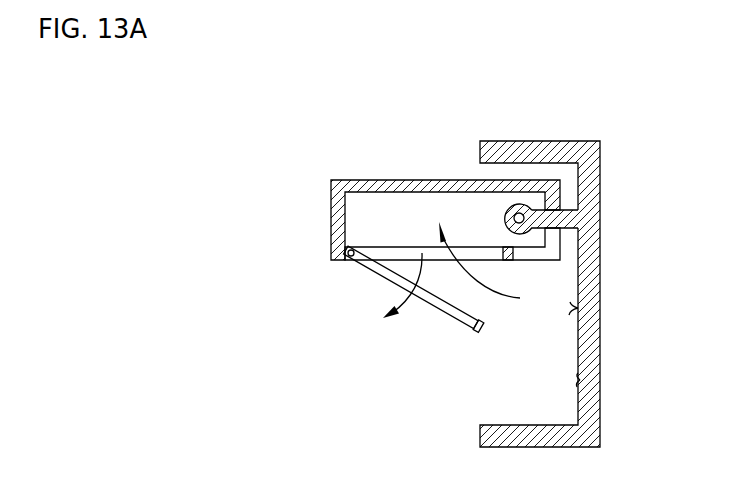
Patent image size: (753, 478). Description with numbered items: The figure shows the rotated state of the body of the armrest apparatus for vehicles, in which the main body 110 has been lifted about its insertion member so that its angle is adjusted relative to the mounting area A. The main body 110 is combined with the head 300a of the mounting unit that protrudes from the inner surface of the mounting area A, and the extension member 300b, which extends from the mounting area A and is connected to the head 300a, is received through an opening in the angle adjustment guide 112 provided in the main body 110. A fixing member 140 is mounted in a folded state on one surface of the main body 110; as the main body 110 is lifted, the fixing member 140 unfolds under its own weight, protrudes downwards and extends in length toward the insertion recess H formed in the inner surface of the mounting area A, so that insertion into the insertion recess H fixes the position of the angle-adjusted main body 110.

The main body 110 is at (418, 182).
The angle adjustment guide 112 is at (555, 237).
The fixing member 140 is at (438, 303).
The head 300a is at (523, 203).
The extension member 300b is at (515, 214).
The mounting area A is at (578, 308).
The insertion recess H is at (580, 380).